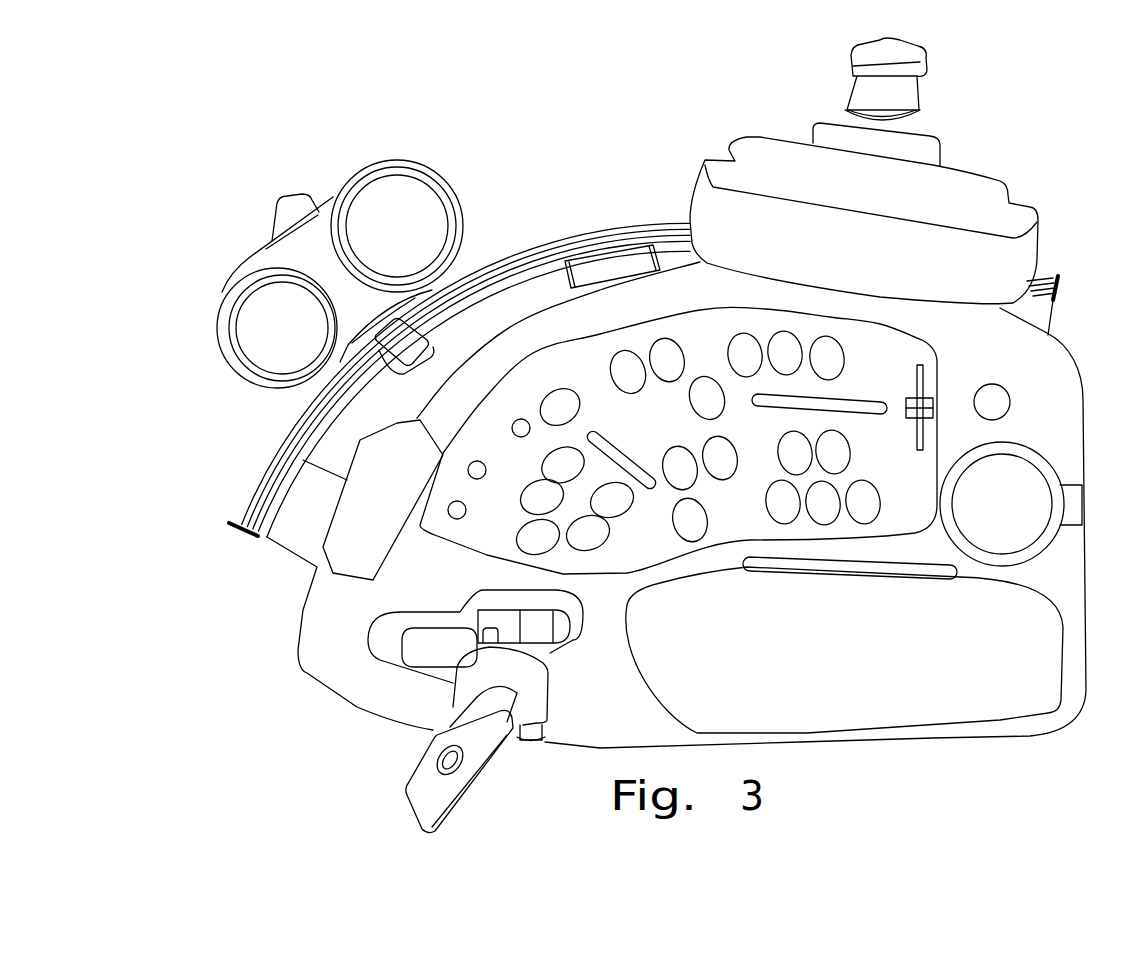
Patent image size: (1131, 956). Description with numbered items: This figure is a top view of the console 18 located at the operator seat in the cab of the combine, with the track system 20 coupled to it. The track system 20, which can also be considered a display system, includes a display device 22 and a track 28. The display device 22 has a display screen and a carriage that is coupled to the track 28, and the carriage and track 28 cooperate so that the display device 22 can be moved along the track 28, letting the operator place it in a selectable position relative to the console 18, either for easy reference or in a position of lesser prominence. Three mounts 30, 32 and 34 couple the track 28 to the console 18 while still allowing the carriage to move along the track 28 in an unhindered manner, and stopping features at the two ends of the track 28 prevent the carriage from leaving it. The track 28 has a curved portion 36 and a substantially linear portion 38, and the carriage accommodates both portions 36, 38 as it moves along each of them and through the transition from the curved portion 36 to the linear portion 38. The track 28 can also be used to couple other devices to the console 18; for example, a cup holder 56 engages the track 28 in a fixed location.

The console 18 is at (347, 743).
The track system 20 is at (630, 159).
The display device 22 is at (976, 135).
The track 28 is at (553, 234).
The mount 30 is at (283, 553).
The mount 32 is at (563, 285).
The mount 34 is at (1057, 310).
The curved portion 36 is at (259, 418).
The substantially linear portion 38 is at (1056, 252).
The cup holder 56 is at (430, 170).